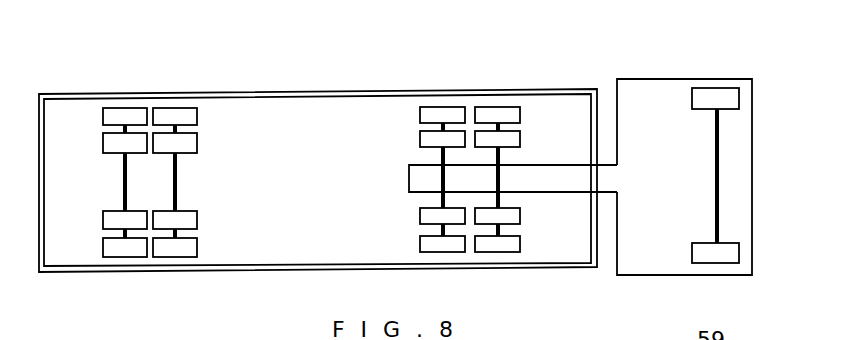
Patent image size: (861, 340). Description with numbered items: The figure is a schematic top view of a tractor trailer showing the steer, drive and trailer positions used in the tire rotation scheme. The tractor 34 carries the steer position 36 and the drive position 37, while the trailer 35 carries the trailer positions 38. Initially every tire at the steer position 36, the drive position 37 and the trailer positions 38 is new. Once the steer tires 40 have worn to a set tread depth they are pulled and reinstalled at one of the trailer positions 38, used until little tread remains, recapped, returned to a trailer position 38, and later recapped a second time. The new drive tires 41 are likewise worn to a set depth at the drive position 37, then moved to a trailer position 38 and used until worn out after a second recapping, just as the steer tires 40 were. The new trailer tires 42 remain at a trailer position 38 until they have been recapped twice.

The tractor 34 is at (641, 61).
The trailer 35 is at (262, 84).
The steer position 36 is at (718, 268).
The drive position 37 is at (492, 211).
The trailer positions 38 is at (156, 209).
The steer tires 40 is at (720, 97).
The drive tires 41 is at (421, 108).
The trailer tires 42 is at (104, 118).